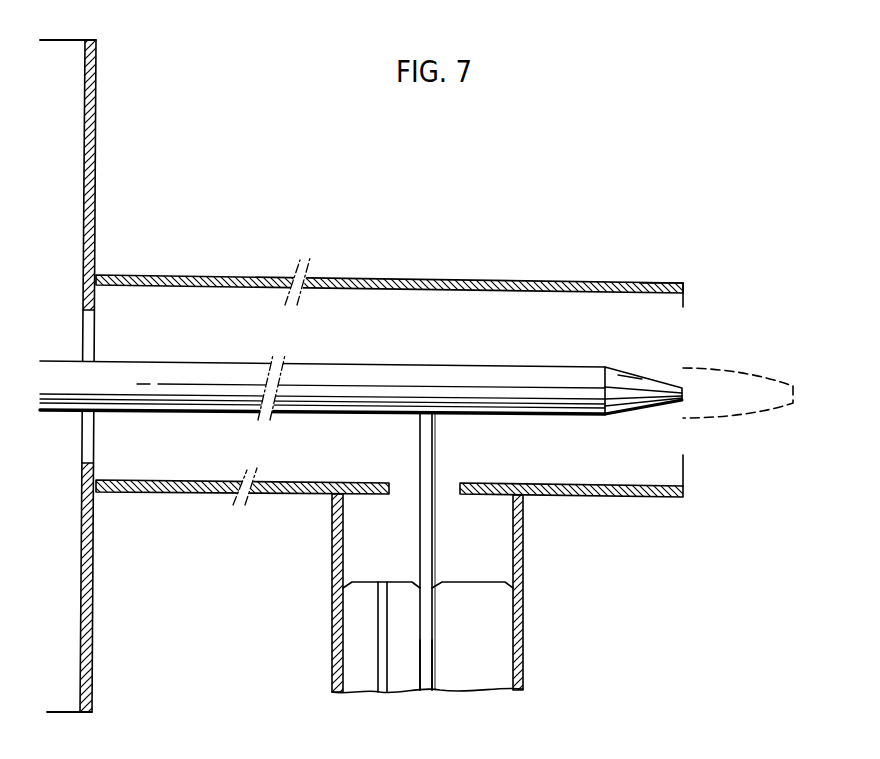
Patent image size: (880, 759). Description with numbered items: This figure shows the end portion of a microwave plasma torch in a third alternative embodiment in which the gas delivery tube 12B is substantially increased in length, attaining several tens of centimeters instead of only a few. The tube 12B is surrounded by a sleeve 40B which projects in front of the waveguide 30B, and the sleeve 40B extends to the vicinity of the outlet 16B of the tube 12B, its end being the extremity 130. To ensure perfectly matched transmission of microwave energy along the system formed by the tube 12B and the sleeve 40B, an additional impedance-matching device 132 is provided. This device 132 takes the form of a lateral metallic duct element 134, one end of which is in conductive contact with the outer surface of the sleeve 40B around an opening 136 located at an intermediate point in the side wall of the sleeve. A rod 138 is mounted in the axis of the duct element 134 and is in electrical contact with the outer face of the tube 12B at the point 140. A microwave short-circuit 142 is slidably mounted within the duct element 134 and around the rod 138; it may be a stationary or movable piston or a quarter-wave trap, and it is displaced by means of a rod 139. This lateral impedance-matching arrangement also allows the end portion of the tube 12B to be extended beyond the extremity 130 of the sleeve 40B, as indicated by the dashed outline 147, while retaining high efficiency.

The waveguide 30B is at (96, 119).
The sleeve 40B is at (256, 276).
The extremity 130 is at (668, 282).
The gas delivery tube 12B is at (383, 375).
The outlet 16B is at (638, 388).
The dashed outline 147 is at (735, 382).
The impedance-matching device 132 is at (321, 523).
The lateral metallic duct element 134 is at (523, 540).
The opening 136 is at (391, 482).
The rod 138 is at (430, 655).
The rod 139 is at (381, 650).
The point 140 is at (437, 439).
The microwave short-circuit 142 is at (497, 583).